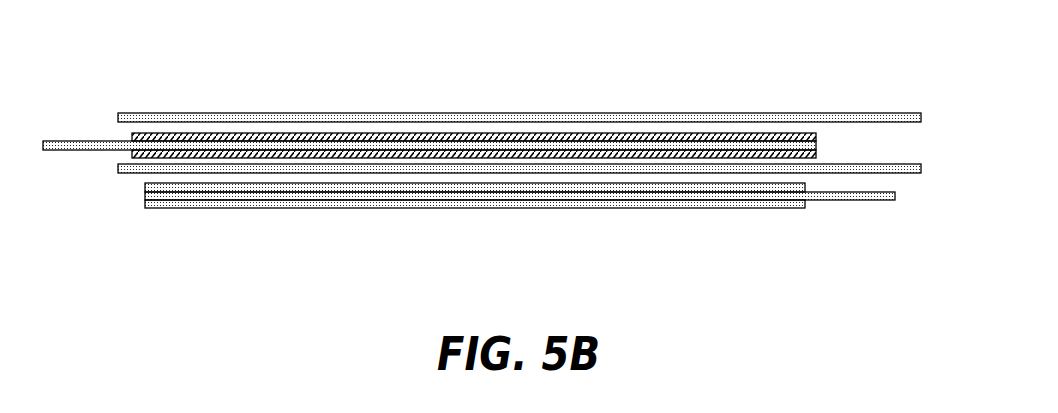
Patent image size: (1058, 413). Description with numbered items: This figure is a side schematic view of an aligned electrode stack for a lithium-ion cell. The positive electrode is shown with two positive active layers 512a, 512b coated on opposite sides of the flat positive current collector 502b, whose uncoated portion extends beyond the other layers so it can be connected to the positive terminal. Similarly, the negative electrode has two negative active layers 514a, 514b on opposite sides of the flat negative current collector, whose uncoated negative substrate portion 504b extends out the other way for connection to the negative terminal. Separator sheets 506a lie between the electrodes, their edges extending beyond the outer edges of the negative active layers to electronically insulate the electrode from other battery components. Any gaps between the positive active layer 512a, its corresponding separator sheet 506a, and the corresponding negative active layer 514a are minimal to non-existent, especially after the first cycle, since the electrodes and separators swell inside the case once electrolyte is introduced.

The separator sheet 506a is at (818, 118).
The negative substrate portion 504b is at (78, 141).
The negative active layer 514a is at (187, 150).
The negative active layer 514b is at (295, 141).
The positive active layer 512a is at (748, 192).
The positive active layer 512b is at (648, 208).
The positive current collector 502b is at (857, 200).